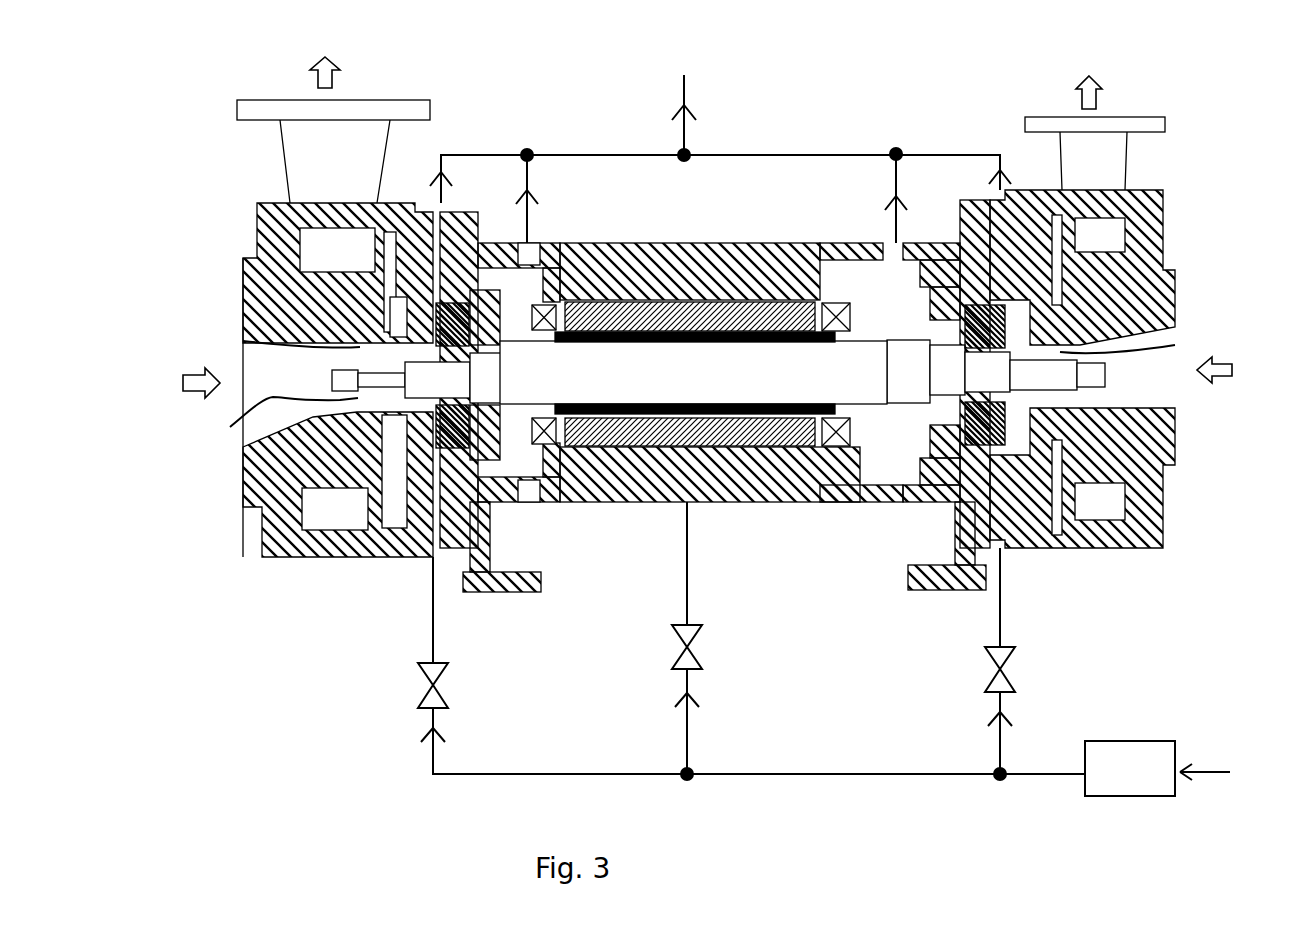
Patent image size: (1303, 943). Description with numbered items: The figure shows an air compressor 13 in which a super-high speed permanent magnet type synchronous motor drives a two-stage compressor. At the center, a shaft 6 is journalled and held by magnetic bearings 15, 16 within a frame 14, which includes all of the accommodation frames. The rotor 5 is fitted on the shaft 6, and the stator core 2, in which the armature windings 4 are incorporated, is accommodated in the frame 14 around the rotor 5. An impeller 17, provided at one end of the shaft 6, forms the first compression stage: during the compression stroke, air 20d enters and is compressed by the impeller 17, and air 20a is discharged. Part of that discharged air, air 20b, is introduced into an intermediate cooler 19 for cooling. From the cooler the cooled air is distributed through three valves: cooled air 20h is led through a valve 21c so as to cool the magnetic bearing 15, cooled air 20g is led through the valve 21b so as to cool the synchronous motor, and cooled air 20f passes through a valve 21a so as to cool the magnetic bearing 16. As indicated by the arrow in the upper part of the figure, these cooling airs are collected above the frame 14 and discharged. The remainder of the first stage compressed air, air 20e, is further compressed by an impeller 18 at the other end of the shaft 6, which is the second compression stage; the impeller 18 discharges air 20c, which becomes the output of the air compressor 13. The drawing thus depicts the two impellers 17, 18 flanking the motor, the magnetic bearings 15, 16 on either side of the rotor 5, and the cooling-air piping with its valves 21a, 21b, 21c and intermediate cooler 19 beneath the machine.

The stator core 2 is at (745, 420).
The armature windings 4 is at (836, 440).
The rotor 5 is at (628, 420).
The shaft 6 is at (515, 392).
The air compressor 13 is at (742, 243).
The frame 14 is at (655, 250).
The magnetic bearing 15 is at (465, 300).
The magnetic bearing 16 is at (988, 345).
The impeller 17 is at (230, 427).
The impeller 18 is at (1050, 460).
The intermediate cooler 19 is at (1162, 745).
The air 20a is at (326, 57).
The air 20b is at (1231, 773).
The air 20c is at (1093, 75).
The air 20d is at (175, 384).
The air 20e is at (1241, 372).
The flow to right valve 20f is at (1022, 721).
The cooled air 20g is at (715, 701).
The cooled air 20h is at (459, 734).
The valve 21a is at (1013, 658).
The valve 21b is at (700, 636).
The valve 21c is at (445, 672).